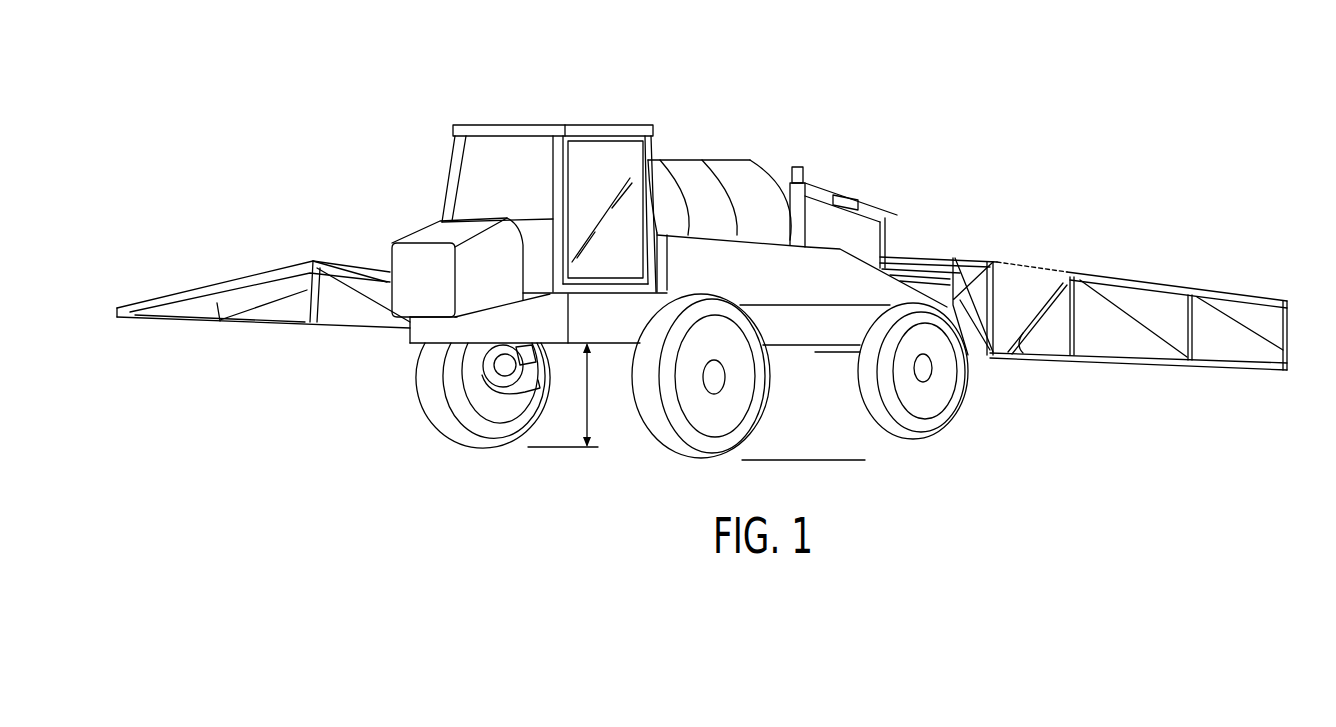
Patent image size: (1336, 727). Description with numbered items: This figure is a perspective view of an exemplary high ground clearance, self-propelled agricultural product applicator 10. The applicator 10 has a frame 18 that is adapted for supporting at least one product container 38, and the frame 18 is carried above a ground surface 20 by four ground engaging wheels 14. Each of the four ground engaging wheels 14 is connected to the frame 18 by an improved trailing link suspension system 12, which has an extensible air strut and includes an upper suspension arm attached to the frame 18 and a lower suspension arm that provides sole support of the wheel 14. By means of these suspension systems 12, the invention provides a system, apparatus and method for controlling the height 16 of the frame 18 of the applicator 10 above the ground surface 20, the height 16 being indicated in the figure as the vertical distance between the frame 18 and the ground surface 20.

The agricultural product applicator 10 is at (413, 130).
The suspension system 12 is at (500, 402).
The ground engaging wheel 14 is at (440, 413).
The height 16 is at (588, 397).
The frame 18 is at (813, 348).
The ground surface 20 is at (846, 460).
The product container 38 is at (665, 158).